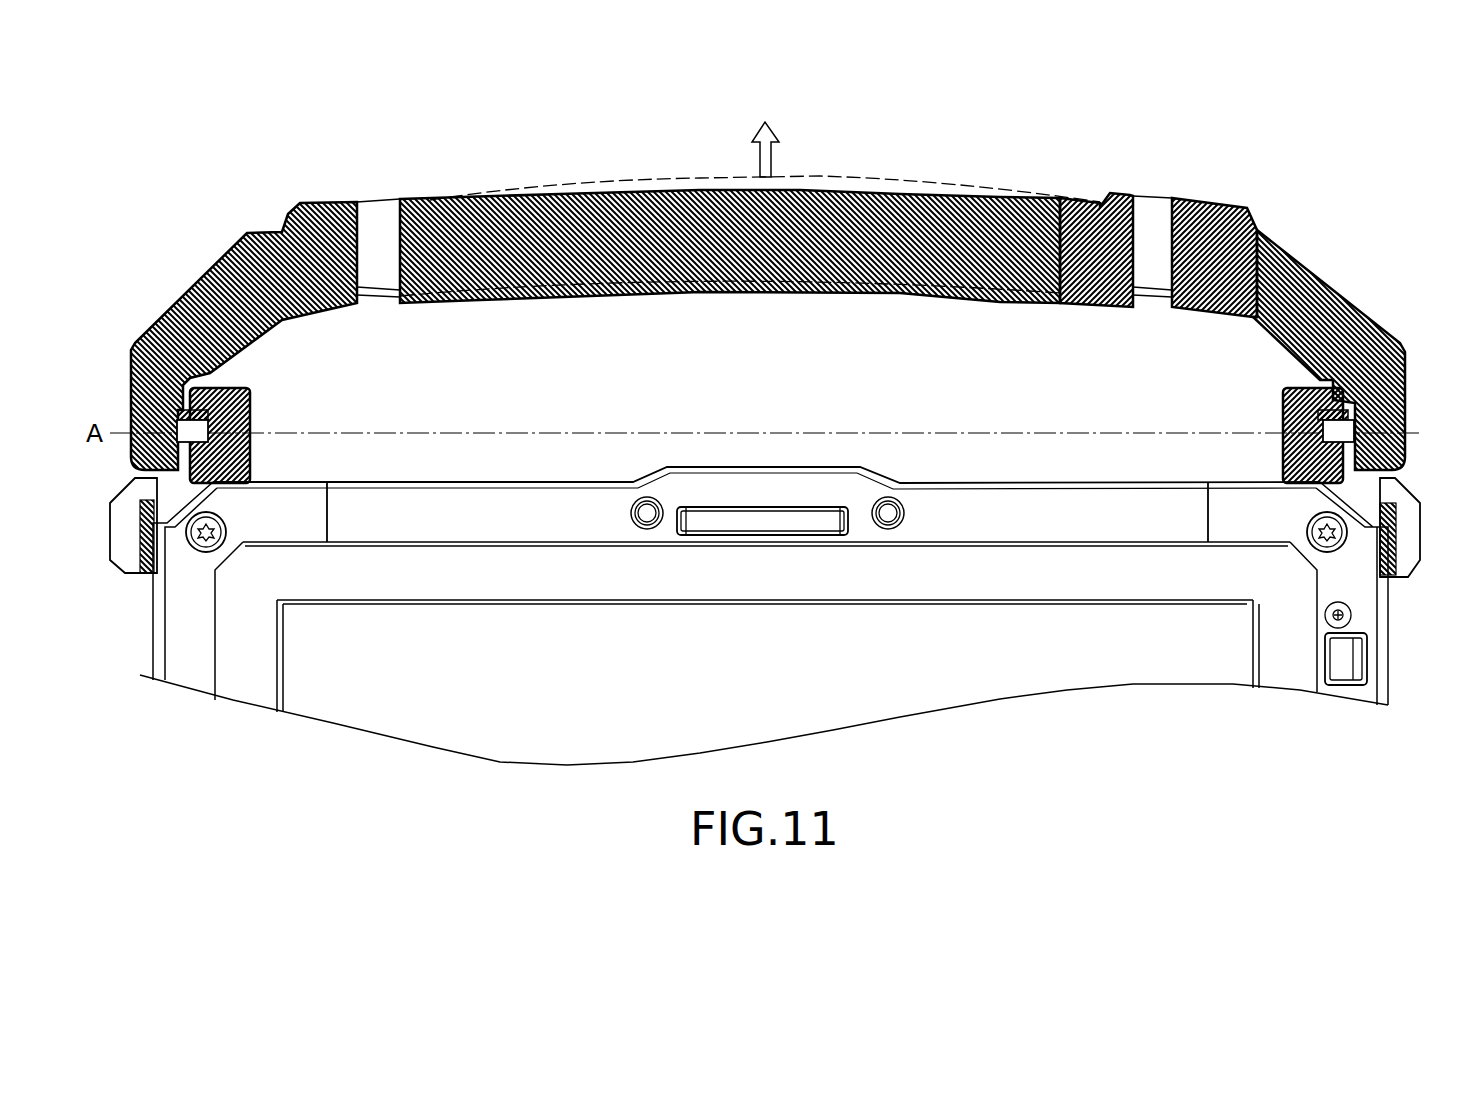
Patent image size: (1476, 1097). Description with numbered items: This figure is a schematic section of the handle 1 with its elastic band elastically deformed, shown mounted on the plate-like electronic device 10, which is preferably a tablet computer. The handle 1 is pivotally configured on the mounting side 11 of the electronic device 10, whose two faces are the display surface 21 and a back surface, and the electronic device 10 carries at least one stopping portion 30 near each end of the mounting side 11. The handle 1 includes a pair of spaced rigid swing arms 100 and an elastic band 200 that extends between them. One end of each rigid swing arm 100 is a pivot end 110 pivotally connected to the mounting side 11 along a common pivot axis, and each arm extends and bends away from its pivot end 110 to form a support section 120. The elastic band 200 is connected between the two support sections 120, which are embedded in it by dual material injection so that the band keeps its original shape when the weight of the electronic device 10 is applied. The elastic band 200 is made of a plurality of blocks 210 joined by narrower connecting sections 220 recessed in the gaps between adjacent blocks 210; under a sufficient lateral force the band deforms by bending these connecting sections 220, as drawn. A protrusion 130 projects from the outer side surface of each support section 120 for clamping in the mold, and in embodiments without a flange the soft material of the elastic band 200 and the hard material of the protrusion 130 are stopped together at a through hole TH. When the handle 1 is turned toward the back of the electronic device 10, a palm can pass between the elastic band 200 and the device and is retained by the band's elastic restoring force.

The handle 1 is at (535, 165).
The electronic device 10 is at (1383, 640).
The mounting side 11 is at (955, 482).
The display surface 21 is at (1030, 633).
The stopping portion 30 is at (1413, 527).
The rigid swing arm 100 is at (1340, 281).
The pivot end 110 is at (1400, 420).
The support section 120 is at (1077, 205).
The protrusion 130 is at (1213, 205).
The elastic band 200 is at (815, 190).
The block 210 is at (727, 188).
The connecting section 220 is at (697, 190).
The through hole TH is at (1153, 213).